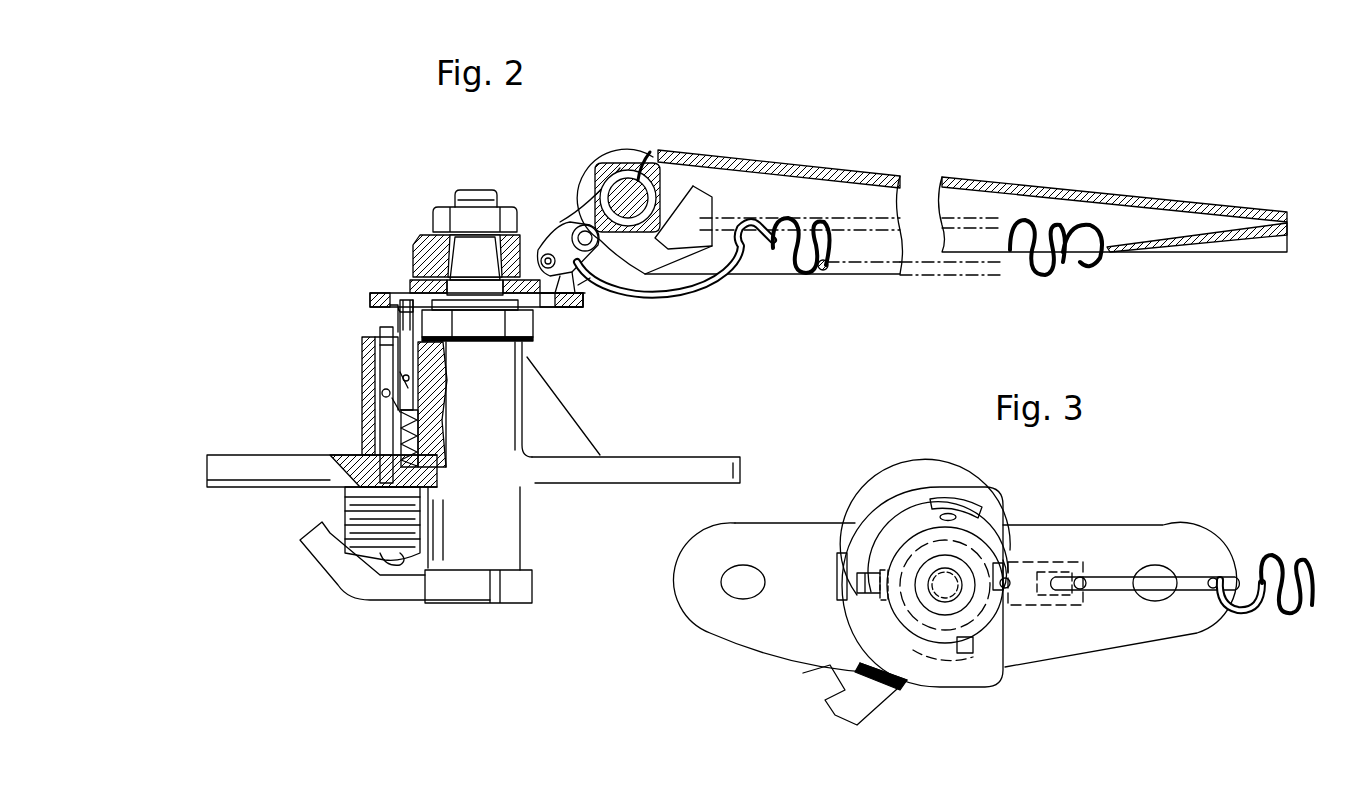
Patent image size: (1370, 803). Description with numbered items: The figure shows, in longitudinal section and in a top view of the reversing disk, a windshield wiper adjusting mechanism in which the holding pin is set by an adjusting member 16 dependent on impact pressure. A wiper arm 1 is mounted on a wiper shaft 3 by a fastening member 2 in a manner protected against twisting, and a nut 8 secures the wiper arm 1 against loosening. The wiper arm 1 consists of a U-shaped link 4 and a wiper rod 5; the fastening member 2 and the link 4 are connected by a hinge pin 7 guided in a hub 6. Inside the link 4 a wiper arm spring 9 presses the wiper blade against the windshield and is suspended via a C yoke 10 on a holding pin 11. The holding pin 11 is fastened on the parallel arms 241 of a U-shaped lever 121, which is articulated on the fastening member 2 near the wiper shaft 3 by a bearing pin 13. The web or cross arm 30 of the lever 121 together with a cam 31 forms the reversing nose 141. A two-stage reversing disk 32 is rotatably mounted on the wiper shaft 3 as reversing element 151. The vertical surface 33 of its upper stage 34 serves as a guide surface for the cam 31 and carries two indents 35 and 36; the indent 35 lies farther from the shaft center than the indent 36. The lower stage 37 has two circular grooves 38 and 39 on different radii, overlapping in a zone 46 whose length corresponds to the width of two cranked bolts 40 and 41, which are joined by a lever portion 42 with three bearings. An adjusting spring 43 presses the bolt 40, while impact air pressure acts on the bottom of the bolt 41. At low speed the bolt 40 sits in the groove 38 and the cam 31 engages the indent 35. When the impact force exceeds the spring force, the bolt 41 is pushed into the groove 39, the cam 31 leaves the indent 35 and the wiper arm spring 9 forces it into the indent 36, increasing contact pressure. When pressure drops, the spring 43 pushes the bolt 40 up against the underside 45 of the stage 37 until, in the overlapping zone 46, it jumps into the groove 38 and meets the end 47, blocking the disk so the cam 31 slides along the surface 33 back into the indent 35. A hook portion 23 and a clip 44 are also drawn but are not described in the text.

In FIG. 2, the wiper arm 1 is at (1052, 175).
In FIG. 2, the fastening member 2 is at (430, 240).
In FIG. 2, the wiper shaft 3 is at (455, 250).
In FIG. 3, the wiper shaft 3 is at (945, 597).
In FIG. 2, the link 4 is at (840, 188).
In FIG. 2, the wiper rod 5 is at (1247, 207).
In FIG. 2, the hub 6 is at (630, 178).
In FIG. 2, the hinge pin 7 is at (692, 205).
In FIG. 2, the nut 8 is at (450, 213).
In FIG. 2, the wiper arm spring 9 is at (1017, 268).
In FIG. 3, the wiper arm spring 9 is at (1298, 560).
In FIG. 2, the C yoke 10 is at (690, 287).
In FIG. 3, the C yoke 10 is at (1218, 565).
In FIG. 2, the holding pin 11 is at (575, 235).
In FIG. 2, the bearing pin 13 is at (547, 254).
In FIG. 2, the adjusting member 16 is at (335, 412).
In FIG. 2, the spring hook end 23 is at (1080, 258).
In FIG. 2, the web or cross arm 30 is at (580, 290).
In FIG. 2, the cam 31 is at (545, 293).
In FIG. 3, the cam 31 is at (1040, 580).
In FIG. 2, the two-stage reversing disk 32 is at (330, 272).
In FIG. 3, the two-stage reversing disk 32 is at (872, 502).
In FIG. 3, the vertical surface 33 is at (985, 520).
In FIG. 2, the upper stage 34 is at (440, 260).
In FIG. 3, the upper stage 34 is at (980, 630).
In FIG. 3, the indent 35 is at (945, 520).
In FIG. 3, the indent 36 is at (1013, 583).
In FIG. 2, the lower stage 37 is at (372, 300).
In FIG. 3, the lower stage 37 is at (860, 630).
In FIG. 2, the circular groove 38 is at (425, 286).
In FIG. 3, the circular groove 38 is at (942, 655).
In FIG. 2, the circular groove 39 is at (575, 300).
In FIG. 3, the circular groove 39 is at (905, 515).
In FIG. 2, the cranked bolt 40 is at (402, 368).
In FIG. 2, the cranked bolt 41 is at (385, 352).
In FIG. 2, the lever portion 42 is at (385, 390).
In FIG. 2, the adjusting spring 43 is at (405, 442).
In FIG. 2, the retaining clip 44 is at (395, 595).
In FIG. 2, the underside 45 is at (399, 306).
In FIG. 3, the overlapping zone 46 is at (858, 585).
In FIG. 3, the end 47 is at (872, 585).
In FIG. 2, the lever 121 is at (585, 280).
In FIG. 3, the lever 121 is at (1025, 605).
In FIG. 2, the reversing nose 141 is at (565, 293).
In FIG. 3, the reversing element 151 is at (993, 482).
In FIG. 2, the arms 241 is at (552, 250).